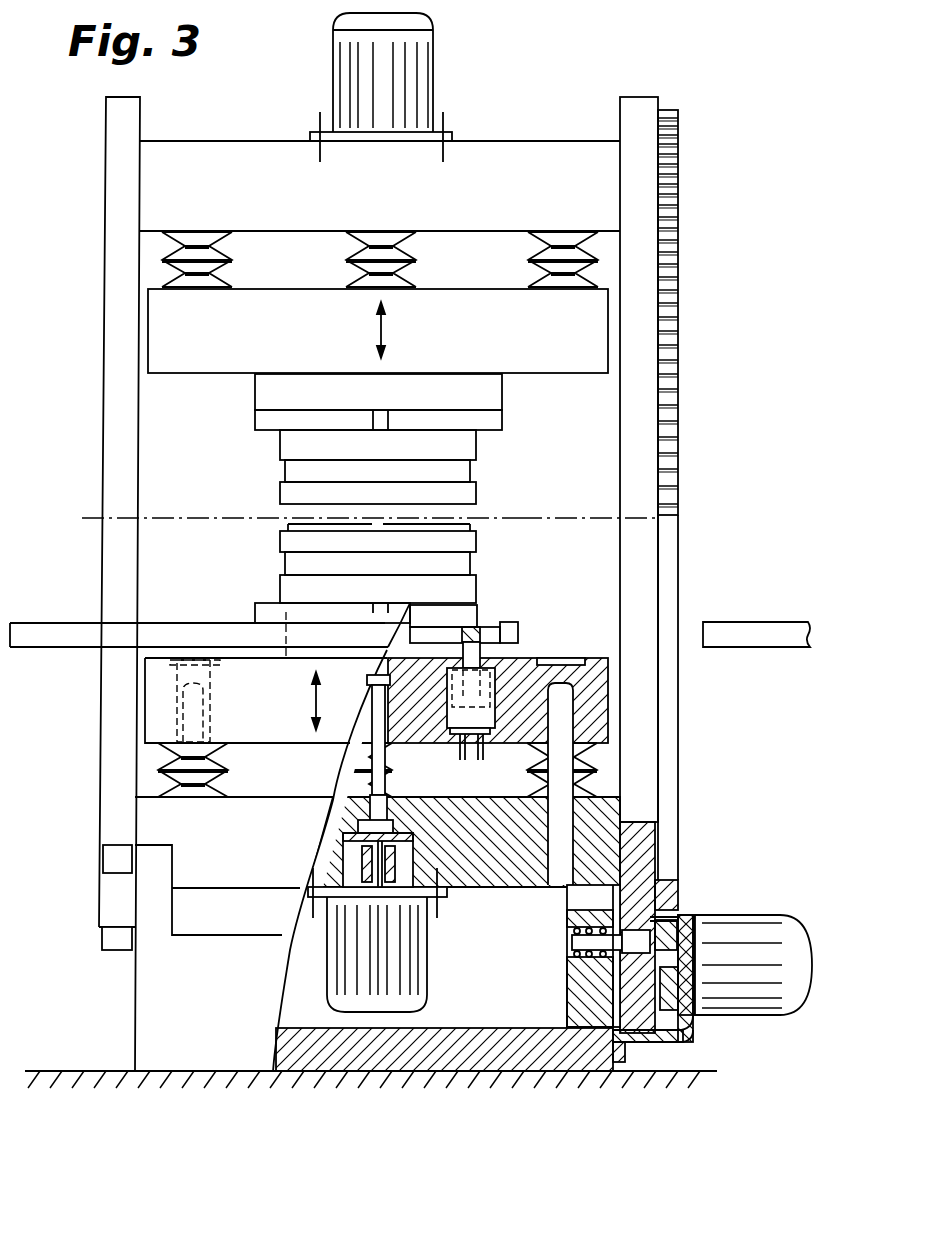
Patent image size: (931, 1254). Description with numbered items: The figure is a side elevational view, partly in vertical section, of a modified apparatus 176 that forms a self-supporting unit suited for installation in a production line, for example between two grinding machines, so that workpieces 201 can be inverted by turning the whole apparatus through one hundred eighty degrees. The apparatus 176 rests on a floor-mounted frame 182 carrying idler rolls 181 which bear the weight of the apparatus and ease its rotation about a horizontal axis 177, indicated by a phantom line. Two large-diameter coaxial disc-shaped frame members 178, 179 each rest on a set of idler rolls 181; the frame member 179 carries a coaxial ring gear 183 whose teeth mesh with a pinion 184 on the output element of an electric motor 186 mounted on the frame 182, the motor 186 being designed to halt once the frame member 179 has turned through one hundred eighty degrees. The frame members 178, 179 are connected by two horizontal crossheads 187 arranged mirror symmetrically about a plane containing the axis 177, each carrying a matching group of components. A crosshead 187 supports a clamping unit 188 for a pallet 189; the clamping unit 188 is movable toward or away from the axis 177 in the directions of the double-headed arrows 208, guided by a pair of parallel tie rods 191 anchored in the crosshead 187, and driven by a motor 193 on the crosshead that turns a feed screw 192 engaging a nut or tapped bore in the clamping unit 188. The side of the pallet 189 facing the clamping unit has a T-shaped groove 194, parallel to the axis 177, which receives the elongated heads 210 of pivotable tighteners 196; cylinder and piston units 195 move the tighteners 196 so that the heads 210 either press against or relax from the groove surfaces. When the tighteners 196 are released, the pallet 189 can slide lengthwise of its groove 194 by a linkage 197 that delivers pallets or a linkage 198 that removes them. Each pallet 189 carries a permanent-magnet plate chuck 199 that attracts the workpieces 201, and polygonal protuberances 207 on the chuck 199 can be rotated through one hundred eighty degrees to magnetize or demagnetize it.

The apparatus 176 is at (84, 205).
The axis 177 is at (88, 518).
The frame member 178 is at (118, 305).
The frame member 179 is at (640, 106).
The idler rolls 181 is at (100, 942).
The frame 182 is at (410, 1050).
The ring gear 183 is at (672, 152).
The pinion 184 is at (670, 1010).
The electric motor 186 is at (740, 993).
The crossheads 187 is at (482, 158).
The clamping unit 188 is at (588, 325).
The pallet 189 is at (270, 398).
The tie rods 191 is at (563, 712).
The feed screw 192 is at (378, 733).
The motor 193 is at (350, 66).
The T-shaped groove 194 is at (468, 680).
The cylinder and piston units 195 is at (490, 715).
The tighteners 196 is at (490, 657).
The linkage 197 is at (60, 635).
The linkage 198 is at (790, 598).
The permanent-magnet plate chuck 199 is at (285, 490).
The workpieces 201 is at (472, 518).
The polygonal protuberances 207 is at (620, 518).
The double-headed arrows 208 is at (398, 330).
The heads 210 is at (470, 635).